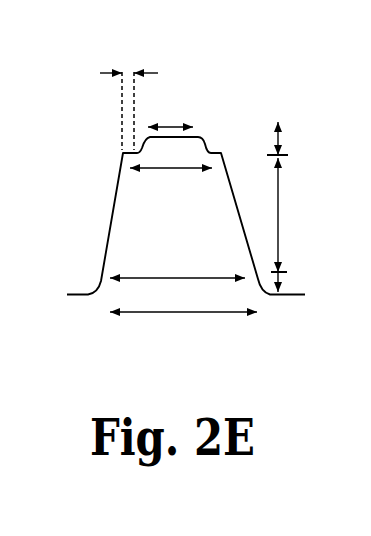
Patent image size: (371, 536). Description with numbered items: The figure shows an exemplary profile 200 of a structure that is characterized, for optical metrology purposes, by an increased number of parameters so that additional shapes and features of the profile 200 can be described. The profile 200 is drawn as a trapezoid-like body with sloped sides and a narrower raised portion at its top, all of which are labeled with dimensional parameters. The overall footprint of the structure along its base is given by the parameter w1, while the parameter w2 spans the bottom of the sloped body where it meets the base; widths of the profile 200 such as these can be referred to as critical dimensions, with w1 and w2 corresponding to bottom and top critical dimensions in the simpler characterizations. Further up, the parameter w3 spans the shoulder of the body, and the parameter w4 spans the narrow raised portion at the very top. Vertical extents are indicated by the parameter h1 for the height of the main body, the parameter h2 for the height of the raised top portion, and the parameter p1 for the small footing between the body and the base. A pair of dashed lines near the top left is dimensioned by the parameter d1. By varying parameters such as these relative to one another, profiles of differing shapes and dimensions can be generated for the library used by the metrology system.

The profile 200 is at (213, 111).
The thickness of spacer / offset dimension d1 is at (129, 92).
The width of rounded top portion w4 is at (170, 107).
The width of upper shoulder w3 is at (171, 188).
The top width parameter w2 is at (177, 261).
The width parameter w1 is at (183, 346).
The height of rounded top portion h2 is at (297, 139).
The height parameter h1 is at (299, 215).
The height of footing / pedestal p1 is at (303, 272).